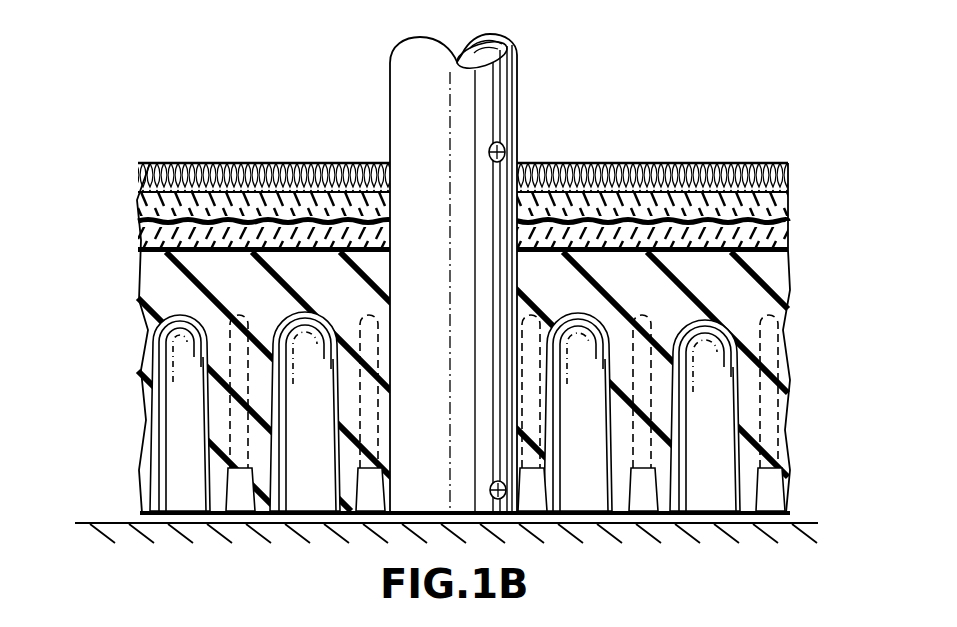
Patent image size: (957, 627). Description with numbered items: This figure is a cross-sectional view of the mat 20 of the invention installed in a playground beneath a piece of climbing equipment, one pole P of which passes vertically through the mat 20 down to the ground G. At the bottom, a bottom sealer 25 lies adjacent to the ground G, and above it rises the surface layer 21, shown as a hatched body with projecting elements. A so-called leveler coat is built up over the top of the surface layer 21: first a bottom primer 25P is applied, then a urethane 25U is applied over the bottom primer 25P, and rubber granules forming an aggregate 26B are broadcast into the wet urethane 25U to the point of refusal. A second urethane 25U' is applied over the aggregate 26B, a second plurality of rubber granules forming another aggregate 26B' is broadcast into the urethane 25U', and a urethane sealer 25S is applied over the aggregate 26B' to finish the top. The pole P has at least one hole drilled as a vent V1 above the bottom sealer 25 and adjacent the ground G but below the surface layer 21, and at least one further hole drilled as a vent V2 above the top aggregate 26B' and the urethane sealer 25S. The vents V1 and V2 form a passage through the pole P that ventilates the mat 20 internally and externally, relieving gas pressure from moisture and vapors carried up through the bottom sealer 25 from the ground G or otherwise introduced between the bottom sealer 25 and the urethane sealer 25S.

The urethane sealer 25S is at (187, 163).
The aggregate 26B is at (235, 178).
The aggregate 26B' is at (652, 137).
The second urethane 25U' is at (501, 205).
The bottom primer 25P is at (140, 234).
The urethane 25U is at (498, 249).
The surface layer 21 is at (212, 268).
The mat 20 is at (143, 327).
The bottom sealer 25 is at (146, 512).
The climbing pole P is at (410, 128).
The vent V1 is at (490, 490).
The vent V2 is at (506, 143).
The ground G is at (152, 538).